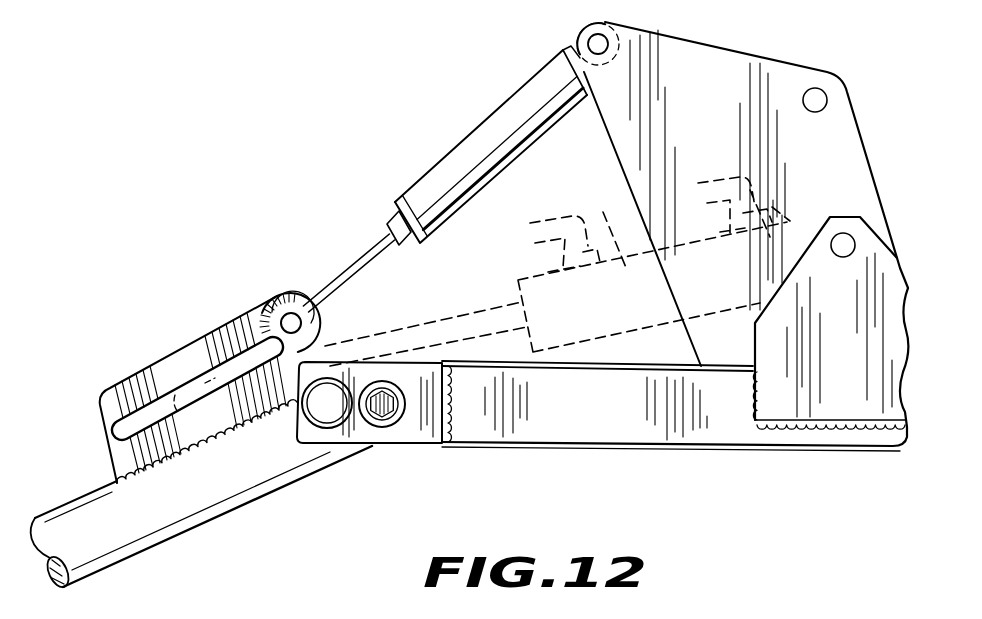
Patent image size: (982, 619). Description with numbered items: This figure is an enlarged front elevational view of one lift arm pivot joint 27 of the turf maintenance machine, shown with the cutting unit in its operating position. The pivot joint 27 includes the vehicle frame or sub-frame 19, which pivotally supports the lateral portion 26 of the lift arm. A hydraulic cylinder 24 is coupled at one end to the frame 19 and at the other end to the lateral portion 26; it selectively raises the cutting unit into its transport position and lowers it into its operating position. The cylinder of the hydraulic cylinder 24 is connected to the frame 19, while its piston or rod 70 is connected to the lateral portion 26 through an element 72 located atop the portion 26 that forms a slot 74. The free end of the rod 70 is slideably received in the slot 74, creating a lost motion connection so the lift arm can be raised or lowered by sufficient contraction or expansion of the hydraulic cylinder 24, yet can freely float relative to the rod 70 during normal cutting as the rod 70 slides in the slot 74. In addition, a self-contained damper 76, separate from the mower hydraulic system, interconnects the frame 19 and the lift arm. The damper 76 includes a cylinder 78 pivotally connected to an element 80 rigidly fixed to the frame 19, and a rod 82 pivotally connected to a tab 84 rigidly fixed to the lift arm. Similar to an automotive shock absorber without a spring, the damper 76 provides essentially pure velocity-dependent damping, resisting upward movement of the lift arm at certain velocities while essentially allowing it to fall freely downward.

The frame or sub-frame 19 is at (607, 428).
The hydraulic cylinder 24 is at (607, 215).
The lateral portion 26 is at (158, 542).
The pivot joint 27 is at (254, 180).
The rod 70 is at (405, 322).
The element 72 is at (103, 415).
The slot 74 is at (145, 411).
The damper 76 is at (426, 163).
The cylinder 78 is at (533, 75).
The element 80 is at (720, 55).
The rod 82 is at (345, 240).
The tab 84 is at (265, 293).